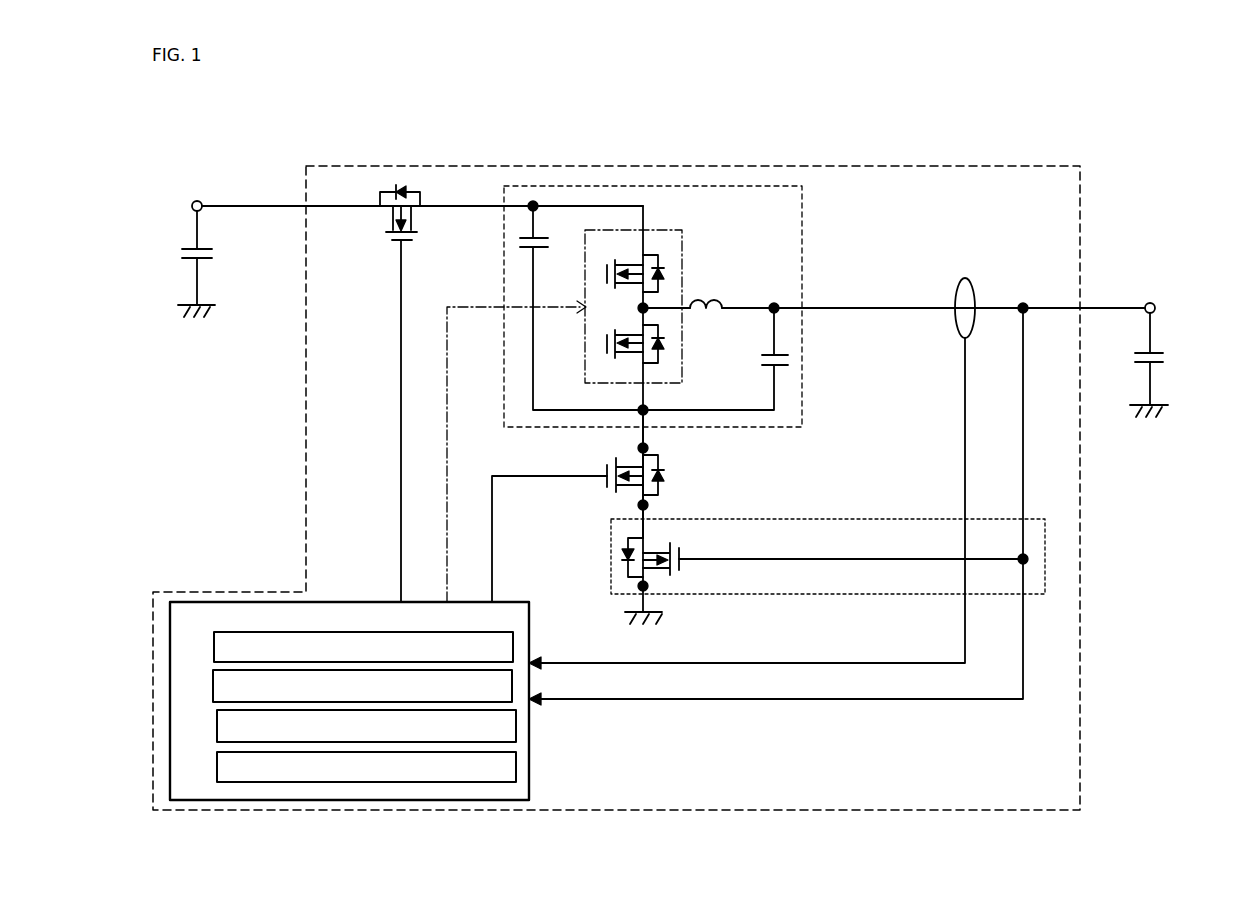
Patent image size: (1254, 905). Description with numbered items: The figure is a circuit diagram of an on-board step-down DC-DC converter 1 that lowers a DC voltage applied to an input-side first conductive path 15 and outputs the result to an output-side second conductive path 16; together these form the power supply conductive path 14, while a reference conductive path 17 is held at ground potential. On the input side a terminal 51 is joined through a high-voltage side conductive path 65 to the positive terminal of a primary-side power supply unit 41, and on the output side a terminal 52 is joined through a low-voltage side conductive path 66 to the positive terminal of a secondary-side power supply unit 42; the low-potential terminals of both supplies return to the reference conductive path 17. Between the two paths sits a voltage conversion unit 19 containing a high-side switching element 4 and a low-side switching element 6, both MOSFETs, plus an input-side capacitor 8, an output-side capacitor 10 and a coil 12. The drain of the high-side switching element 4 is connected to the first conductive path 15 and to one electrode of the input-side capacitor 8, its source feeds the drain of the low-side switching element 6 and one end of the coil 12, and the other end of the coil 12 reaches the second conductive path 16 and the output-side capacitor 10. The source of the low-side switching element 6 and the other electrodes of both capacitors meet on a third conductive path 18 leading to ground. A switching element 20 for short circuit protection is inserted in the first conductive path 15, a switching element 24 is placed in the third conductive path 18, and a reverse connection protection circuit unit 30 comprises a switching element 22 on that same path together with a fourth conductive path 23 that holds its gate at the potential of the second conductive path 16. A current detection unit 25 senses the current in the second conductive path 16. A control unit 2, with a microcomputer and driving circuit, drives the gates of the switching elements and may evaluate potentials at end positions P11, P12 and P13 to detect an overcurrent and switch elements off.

The DC-DC converter 1 is at (990, 164).
The control unit 2 is at (340, 801).
The high-side switching element 4 is at (632, 260).
The low-side switching element 6 is at (626, 354).
The input-side capacitor 8 is at (528, 252).
The output-side capacitor 10 is at (762, 368).
The coil 12 is at (722, 300).
The power supply conductive path 14 is at (334, 205).
The first conductive path 15 is at (350, 207).
The second conductive path 16 is at (1058, 310).
The reference conductive path 17 is at (655, 605).
The third conductive path 18 is at (645, 438).
The voltage conversion unit 19 is at (716, 186).
The switching element for short circuit protection 20 is at (415, 222).
The switching element for reverse connection protection 22 is at (655, 545).
The fourth conductive path 23 is at (867, 559).
The switching element 24 is at (638, 463).
The current detection unit 25 is at (960, 292).
The reverse connection protection circuit unit 30 is at (608, 572).
The primary-side power supply unit 41 is at (183, 248).
The secondary-side power supply unit 42 is at (1163, 350).
The terminal 51 is at (197, 201).
The terminal 52 is at (1157, 302).
The high-voltage side conductive path 65 is at (273, 207).
The low-voltage side conductive path 66 is at (1120, 310).
The end position P11 is at (650, 450).
The end position P12 is at (650, 506).
The end position P13 is at (645, 590).